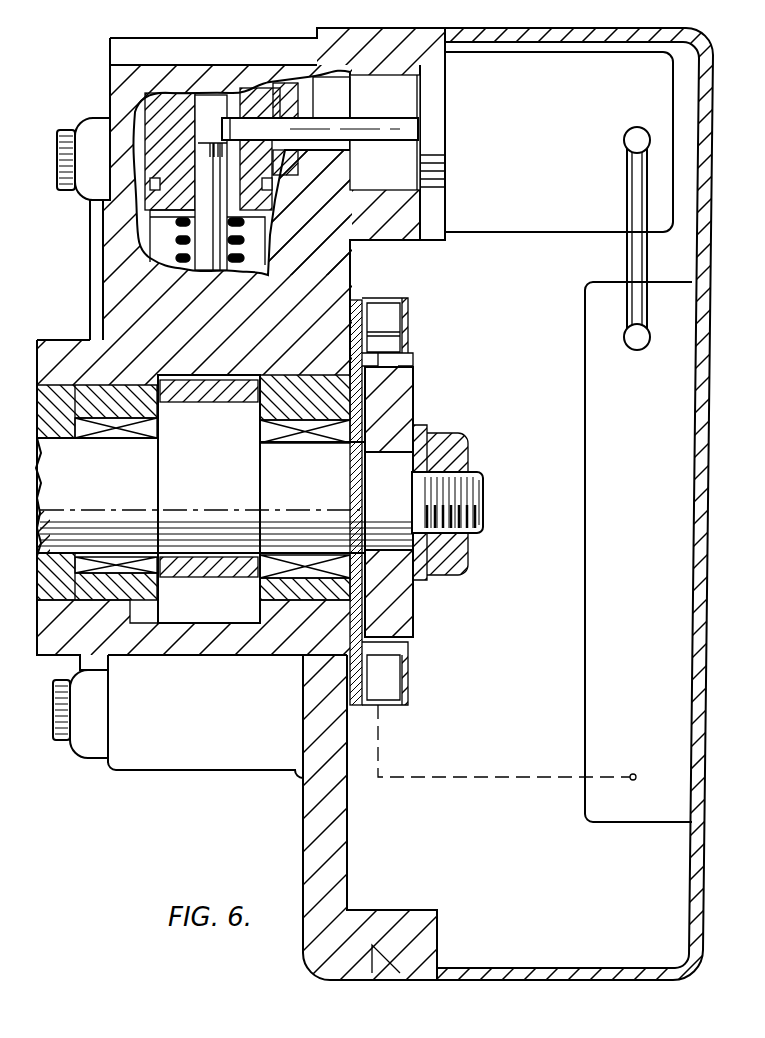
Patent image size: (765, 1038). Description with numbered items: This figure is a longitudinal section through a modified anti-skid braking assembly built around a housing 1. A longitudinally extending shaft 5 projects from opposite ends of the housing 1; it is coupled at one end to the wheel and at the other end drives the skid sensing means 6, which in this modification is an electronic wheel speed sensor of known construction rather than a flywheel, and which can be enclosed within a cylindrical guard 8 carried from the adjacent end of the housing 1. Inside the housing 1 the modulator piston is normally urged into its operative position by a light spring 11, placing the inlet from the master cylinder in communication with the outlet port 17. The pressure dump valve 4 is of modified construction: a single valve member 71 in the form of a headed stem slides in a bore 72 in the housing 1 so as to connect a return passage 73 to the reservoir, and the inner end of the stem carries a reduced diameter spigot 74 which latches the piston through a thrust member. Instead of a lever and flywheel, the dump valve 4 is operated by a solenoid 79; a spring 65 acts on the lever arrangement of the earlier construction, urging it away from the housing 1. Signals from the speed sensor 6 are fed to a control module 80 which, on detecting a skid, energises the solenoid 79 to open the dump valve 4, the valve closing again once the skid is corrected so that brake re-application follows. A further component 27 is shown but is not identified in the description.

The housing 1 is at (332, 874).
The pressure dump valve 4 is at (402, 128).
The shaft 5 is at (103, 523).
The skid sensing means 6 is at (396, 406).
The cylindrical guard 8 is at (625, 980).
The light spring 11 is at (163, 253).
The outlet port 17 is at (167, 233).
The sleeve 27 is at (217, 520).
The spring 65 is at (205, 200).
The valve member 71 is at (377, 128).
The bore 72 is at (268, 80).
The return passage 73 is at (244, 92).
The spigot 74 is at (207, 108).
The solenoid 79 is at (542, 192).
The control module 80 is at (612, 568).